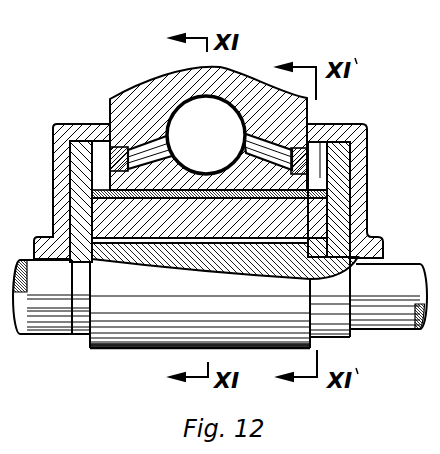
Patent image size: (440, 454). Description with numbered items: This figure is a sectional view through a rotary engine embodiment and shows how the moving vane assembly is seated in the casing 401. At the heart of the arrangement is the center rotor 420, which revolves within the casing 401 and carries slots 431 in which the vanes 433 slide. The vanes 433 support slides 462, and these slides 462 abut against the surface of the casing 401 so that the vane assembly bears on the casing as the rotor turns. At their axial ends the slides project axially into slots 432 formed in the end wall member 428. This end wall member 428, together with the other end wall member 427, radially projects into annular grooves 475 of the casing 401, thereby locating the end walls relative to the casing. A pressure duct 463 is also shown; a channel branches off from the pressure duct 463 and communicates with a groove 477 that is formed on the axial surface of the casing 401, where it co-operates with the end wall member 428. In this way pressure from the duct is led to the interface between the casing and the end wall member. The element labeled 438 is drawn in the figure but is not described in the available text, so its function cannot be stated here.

The casing 401 is at (367, 145).
The center rotor 420 is at (135, 322).
The end wall member 427 is at (350, 158).
The end wall member 428 is at (337, 250).
The slots 431 is at (108, 236).
The slots 432 is at (320, 239).
The vanes 433 is at (298, 210).
The spacer ring 438 is at (320, 168).
The slides 462 is at (326, 195).
The pressure duct 463 is at (190, 122).
The annular grooves 475 is at (340, 135).
The groove 477 is at (309, 160).